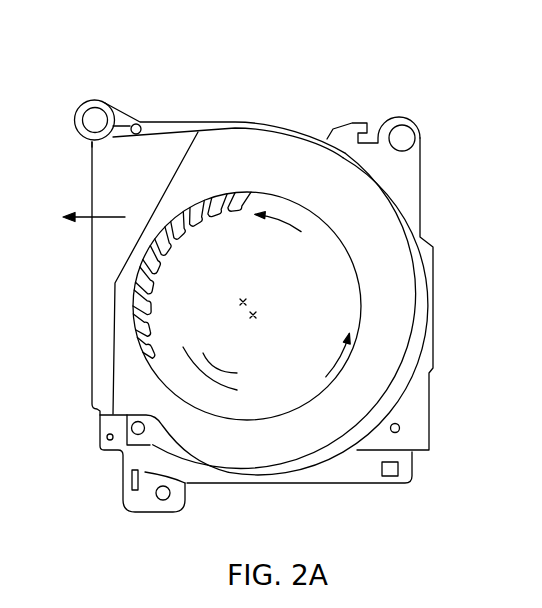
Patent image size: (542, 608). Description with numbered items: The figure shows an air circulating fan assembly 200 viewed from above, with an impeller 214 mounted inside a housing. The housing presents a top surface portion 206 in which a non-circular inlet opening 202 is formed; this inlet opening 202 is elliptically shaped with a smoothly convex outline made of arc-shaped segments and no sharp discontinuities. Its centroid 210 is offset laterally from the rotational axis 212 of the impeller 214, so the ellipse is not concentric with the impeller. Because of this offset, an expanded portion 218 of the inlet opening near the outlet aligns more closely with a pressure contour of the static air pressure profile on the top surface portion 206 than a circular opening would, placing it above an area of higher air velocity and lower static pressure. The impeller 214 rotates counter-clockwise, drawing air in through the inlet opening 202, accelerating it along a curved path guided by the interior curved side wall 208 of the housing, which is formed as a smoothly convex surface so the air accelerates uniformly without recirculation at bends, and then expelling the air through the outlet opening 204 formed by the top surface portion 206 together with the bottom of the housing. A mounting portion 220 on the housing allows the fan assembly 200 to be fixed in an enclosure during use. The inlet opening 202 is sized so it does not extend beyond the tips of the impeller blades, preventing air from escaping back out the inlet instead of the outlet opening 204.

The fan assembly 200 is at (338, 84).
The non-circular inlet opening 202 is at (129, 320).
The outlet opening 204 is at (91, 372).
The top surface portion 206 is at (398, 357).
The interior curved side wall 208 is at (412, 229).
The centroid 210 is at (244, 298).
The rotational axis 212 is at (258, 315).
The impeller 214 is at (328, 285).
The expanded portion of the inlet opening 218 is at (161, 224).
The mounting portion 220 is at (383, 152).